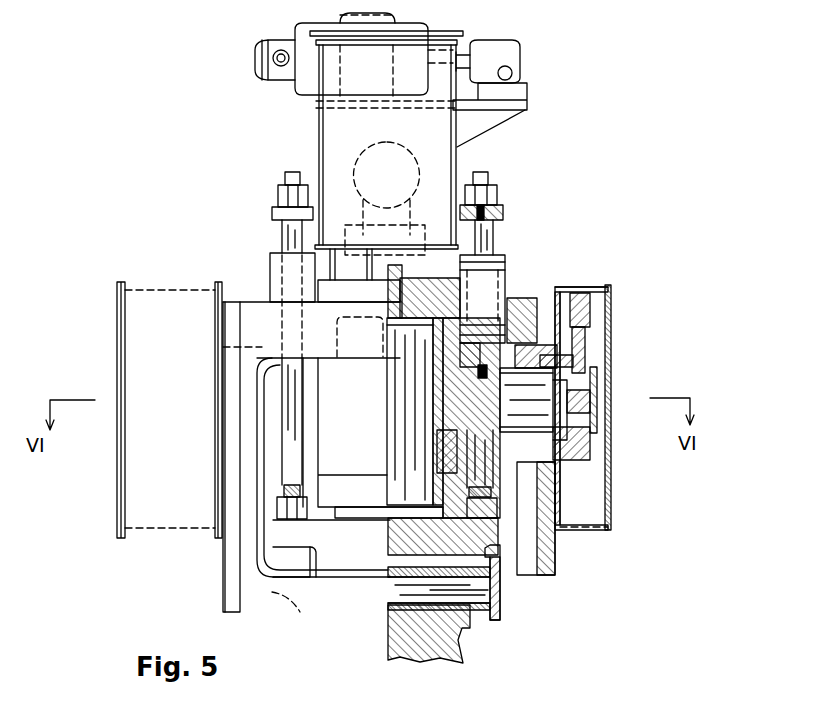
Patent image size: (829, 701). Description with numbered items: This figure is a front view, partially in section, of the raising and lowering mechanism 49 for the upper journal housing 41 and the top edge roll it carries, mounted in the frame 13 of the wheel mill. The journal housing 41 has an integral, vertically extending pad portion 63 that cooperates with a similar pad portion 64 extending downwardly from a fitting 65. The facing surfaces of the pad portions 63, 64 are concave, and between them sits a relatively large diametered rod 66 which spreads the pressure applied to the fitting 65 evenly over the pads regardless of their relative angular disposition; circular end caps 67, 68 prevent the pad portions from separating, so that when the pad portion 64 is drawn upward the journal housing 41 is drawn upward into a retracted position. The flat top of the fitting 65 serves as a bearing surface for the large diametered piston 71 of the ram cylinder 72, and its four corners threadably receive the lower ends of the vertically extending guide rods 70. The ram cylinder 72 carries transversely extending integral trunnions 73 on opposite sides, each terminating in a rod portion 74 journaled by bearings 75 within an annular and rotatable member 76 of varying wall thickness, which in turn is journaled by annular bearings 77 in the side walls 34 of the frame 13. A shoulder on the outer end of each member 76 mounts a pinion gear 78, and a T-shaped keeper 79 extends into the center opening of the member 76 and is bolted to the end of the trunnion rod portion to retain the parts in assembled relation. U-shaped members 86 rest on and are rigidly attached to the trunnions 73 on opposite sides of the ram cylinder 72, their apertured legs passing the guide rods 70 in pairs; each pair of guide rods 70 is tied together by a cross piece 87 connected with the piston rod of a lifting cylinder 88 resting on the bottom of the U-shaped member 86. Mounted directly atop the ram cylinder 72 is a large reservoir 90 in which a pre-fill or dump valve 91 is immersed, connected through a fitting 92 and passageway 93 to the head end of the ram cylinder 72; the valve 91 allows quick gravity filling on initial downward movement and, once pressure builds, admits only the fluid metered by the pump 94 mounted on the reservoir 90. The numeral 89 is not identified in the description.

The mounting frame 13 is at (262, 310).
The side walls 34 is at (236, 564).
The journal housing 41 is at (447, 642).
The raising and lowering mechanism 49 is at (638, 223).
The pad portion 63 is at (496, 622).
The pad portion 64 is at (505, 565).
The fitting 65 is at (342, 537).
The rod 66 is at (502, 608).
The end cap 67 is at (502, 593).
The end cap 68 is at (272, 592).
The guide rods 70 is at (284, 240).
The piston 71 is at (413, 357).
The ram cylinder 72 is at (470, 305).
The trunnions 73 is at (272, 408).
The rod portions 74 is at (560, 382).
The bearings 75 is at (560, 352).
The annular and rotatable members 76 is at (575, 458).
The annular bearings 77 is at (562, 315).
The pinion gear 78 is at (582, 310).
The T-shaped keeper 79 is at (566, 410).
The U-shaped members 86 is at (272, 272).
The cross pieces 87 is at (275, 212).
The lifting cylinders 88 is at (447, 308).
The nut 89 is at (290, 188).
The reservoir 90 is at (440, 156).
The pre-fill or dump valve 91 is at (372, 165).
The fitting 92 is at (408, 250).
The passageway 93 is at (500, 298).
The pump 94 is at (500, 48).